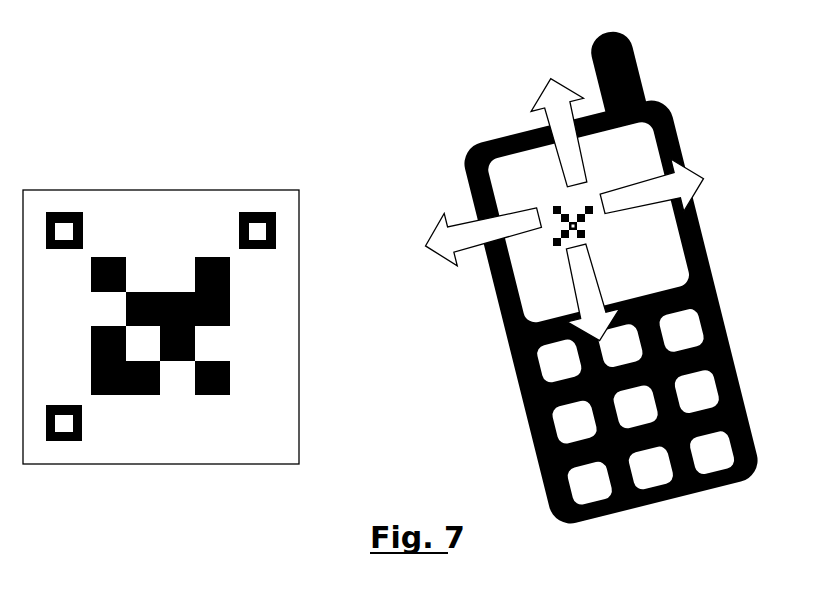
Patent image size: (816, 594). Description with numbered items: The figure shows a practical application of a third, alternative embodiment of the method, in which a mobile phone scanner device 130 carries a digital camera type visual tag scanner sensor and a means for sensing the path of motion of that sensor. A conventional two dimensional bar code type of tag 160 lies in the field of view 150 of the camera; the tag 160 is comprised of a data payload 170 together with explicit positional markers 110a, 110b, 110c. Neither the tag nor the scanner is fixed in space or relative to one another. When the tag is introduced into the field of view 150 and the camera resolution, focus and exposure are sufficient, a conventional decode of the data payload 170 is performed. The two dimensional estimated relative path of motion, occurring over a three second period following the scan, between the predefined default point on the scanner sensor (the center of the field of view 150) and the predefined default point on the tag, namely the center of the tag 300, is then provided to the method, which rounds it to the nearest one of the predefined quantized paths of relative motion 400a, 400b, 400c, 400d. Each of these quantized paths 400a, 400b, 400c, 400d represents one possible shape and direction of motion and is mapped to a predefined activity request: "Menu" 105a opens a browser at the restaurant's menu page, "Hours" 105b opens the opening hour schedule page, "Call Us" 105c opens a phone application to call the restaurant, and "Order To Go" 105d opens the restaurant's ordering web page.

The Menu activity request 105a is at (58, 330).
The Hours activity request 105b is at (158, 207).
The Call Us activity request 105c is at (277, 318).
The Order To Go activity request 105d is at (165, 462).
The explicit positional marker 110a is at (83, 212).
The explicit positional marker 110b is at (276, 212).
The explicit positional marker 110c is at (82, 441).
The mobile phone scanner device 130 is at (672, 112).
The field of view 150 is at (557, 247).
The two dimensional bar code tag 160 is at (280, 430).
The data payload 170 is at (230, 381).
The predefined default point on the tag 300 is at (148, 342).
The quantized path of relative motion 400a is at (440, 262).
The quantized path of relative motion 400b is at (537, 102).
The quantized path of relative motion 400c is at (703, 185).
The quantized path of relative motion 400d is at (600, 290).